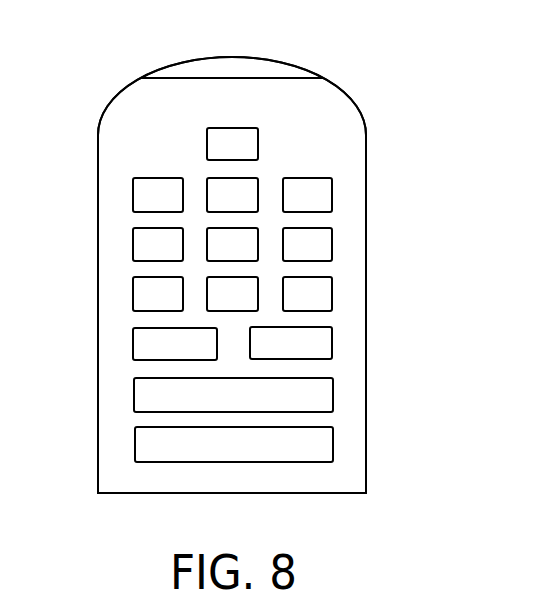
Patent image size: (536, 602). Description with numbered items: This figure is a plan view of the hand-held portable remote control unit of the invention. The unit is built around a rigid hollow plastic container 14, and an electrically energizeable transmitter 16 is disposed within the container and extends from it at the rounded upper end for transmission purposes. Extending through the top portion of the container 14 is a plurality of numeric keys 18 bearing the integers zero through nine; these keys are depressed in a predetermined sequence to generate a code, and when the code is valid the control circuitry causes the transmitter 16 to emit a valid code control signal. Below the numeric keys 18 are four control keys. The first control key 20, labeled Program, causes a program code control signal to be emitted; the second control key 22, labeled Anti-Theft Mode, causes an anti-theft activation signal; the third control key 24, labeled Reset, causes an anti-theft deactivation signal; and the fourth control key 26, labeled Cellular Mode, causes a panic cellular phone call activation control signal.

The rigid hollow plastic container 14 is at (113, 470).
The electrically energizeable transmitter 16 is at (225, 68).
The numeric keys 18 is at (332, 125).
The first control key 20 is at (332, 334).
The second control key 22 is at (325, 410).
The third control key 24 is at (133, 348).
The fourth control key 26 is at (325, 455).